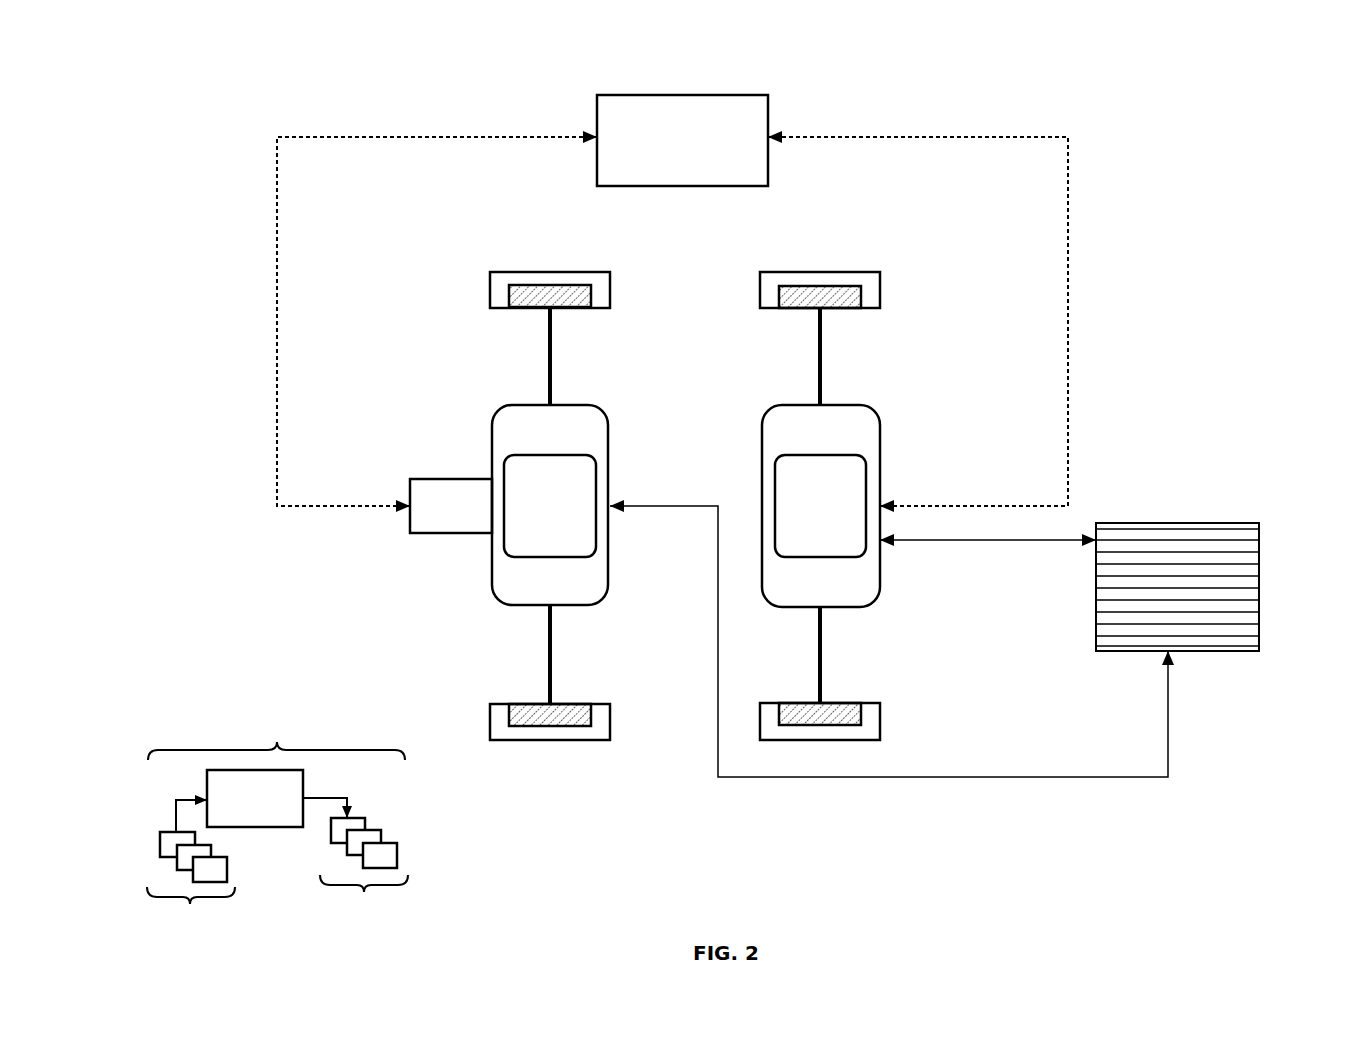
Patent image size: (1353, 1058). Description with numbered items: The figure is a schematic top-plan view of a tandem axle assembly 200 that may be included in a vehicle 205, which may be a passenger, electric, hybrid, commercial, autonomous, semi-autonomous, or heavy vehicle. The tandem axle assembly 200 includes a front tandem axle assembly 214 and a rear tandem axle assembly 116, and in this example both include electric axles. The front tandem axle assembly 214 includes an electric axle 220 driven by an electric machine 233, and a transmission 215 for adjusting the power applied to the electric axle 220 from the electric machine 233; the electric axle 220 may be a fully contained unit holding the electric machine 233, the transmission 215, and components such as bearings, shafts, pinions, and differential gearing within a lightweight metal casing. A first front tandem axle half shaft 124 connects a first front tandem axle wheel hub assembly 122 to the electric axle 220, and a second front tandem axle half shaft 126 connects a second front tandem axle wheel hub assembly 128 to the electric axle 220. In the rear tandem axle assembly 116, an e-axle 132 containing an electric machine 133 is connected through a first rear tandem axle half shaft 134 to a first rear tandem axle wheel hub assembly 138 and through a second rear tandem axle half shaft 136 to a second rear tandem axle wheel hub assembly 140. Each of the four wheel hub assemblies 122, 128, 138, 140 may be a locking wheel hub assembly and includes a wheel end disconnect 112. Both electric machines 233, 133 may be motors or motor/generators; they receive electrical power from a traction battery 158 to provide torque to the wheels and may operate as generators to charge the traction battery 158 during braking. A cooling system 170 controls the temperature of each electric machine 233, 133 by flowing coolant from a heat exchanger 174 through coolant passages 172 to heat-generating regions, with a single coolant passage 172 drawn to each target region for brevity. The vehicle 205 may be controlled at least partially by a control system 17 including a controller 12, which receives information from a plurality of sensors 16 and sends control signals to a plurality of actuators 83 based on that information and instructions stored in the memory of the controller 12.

The vehicle 205 is at (140, 68).
The tandem axle assembly 200 is at (383, 212).
The traction battery 158 is at (702, 149).
The front tandem axle assembly 214 is at (535, 506).
The rear tandem axle assembly 116 is at (816, 506).
The second front tandem axle wheel hub assembly 128 is at (555, 272).
The second rear tandem axle wheel hub assembly 140 is at (825, 272).
The wheel end disconnect 112 is at (591, 298).
The second front tandem axle half shaft 126 is at (552, 365).
The second rear tandem axle half shaft 136 is at (822, 365).
The electric axle 220 is at (610, 483).
The e-axle 132 is at (880, 478).
The electric machine 233 is at (570, 517).
The electric machine 133 is at (840, 517).
The transmission 215 is at (471, 517).
The first front tandem axle half shaft 124 is at (553, 620).
The first rear tandem axle half shaft 134 is at (822, 620).
The first front tandem axle wheel hub assembly 122 is at (522, 742).
The first rear tandem axle wheel hub assembly 138 is at (798, 742).
The coolant passage 172 is at (935, 542).
The cooling system 170 is at (1199, 587).
The heat exchanger 174 is at (1093, 597).
The control system 17 is at (282, 831).
The controller 12 is at (270, 810).
The plurality of sensors 16 is at (191, 873).
The plurality of actuators 83 is at (360, 867).